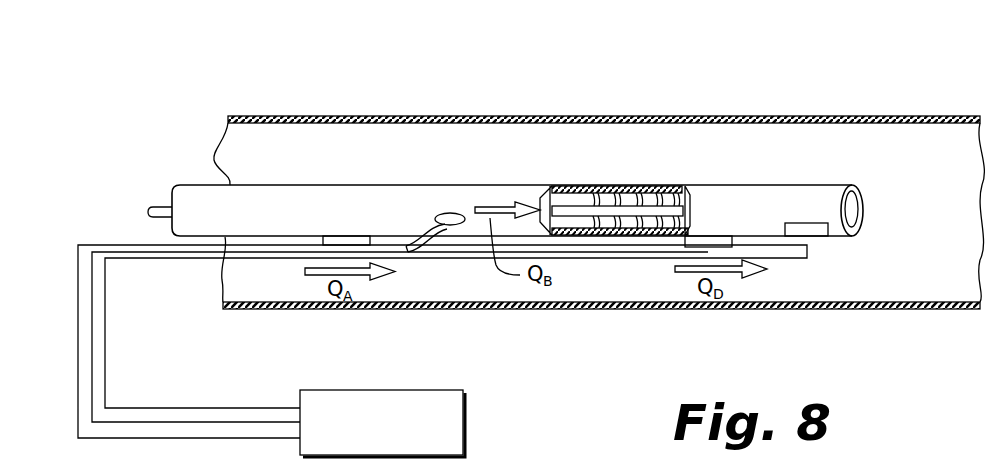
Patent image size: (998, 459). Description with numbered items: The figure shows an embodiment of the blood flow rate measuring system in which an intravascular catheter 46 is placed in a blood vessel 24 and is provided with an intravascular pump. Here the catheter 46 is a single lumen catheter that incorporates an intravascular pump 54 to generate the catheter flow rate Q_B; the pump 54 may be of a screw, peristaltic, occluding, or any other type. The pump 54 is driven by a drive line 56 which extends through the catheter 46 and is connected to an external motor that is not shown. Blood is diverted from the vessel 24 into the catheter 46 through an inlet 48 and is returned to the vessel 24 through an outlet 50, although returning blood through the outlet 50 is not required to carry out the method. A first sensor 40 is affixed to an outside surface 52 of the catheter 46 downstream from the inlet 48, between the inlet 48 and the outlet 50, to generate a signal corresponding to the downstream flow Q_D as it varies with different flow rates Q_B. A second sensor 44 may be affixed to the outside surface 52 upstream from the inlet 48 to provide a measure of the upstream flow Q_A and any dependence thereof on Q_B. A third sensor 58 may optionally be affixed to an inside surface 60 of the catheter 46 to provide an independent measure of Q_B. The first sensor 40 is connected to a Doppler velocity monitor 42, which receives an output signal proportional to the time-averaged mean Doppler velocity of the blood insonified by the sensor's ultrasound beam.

The vessel 24 is at (260, 302).
The first sensor 40 is at (718, 236).
The Doppler velocity monitor 42 is at (348, 390).
The second sensor 44 is at (350, 236).
The intravascular catheter 46 is at (510, 186).
The inlet 48 is at (452, 225).
The outlet 50 is at (857, 190).
The outside surface 52 is at (437, 185).
The intravascular pump 54 is at (630, 236).
The drive line 56 is at (160, 207).
The third sensor 58 is at (797, 223).
The inside surface 60 is at (858, 233).